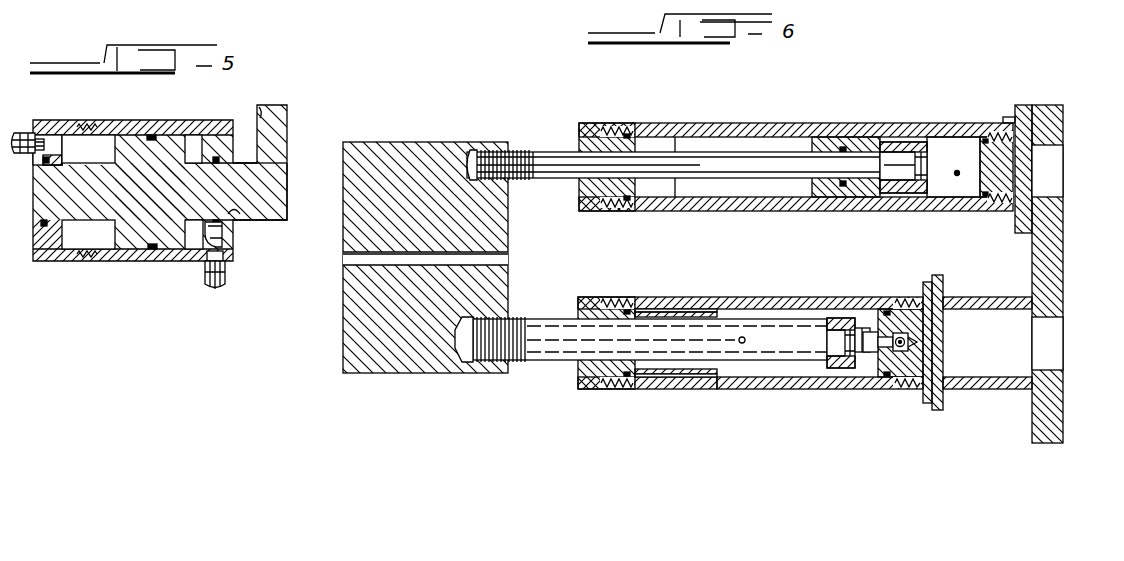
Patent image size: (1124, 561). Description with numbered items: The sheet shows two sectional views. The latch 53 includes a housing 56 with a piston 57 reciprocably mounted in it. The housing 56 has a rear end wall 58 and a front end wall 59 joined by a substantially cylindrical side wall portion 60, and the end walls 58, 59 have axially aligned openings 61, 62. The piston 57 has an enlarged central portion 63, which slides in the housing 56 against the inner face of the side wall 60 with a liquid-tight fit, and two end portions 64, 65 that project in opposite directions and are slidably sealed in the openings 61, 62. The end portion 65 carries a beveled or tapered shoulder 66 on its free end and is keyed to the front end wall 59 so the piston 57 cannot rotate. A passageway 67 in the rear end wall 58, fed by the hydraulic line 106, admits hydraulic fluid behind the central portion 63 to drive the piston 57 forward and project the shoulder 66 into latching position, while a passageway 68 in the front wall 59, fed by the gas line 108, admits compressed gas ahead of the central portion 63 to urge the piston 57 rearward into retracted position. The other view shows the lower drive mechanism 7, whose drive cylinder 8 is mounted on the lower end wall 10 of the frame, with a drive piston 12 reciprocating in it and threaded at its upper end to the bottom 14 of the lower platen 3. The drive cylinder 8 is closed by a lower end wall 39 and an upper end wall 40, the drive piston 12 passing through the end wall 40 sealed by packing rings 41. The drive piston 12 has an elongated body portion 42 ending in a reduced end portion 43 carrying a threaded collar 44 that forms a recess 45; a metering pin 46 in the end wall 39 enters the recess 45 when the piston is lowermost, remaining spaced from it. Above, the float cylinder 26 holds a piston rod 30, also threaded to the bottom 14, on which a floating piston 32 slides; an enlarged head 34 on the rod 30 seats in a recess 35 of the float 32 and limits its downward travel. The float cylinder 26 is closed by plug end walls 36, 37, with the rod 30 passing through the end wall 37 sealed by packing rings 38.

In FIG. 6, the lower platen 3 is at (373, 157).
In FIG. 6, the bottom of the lower platen 14 is at (488, 215).
In FIG. 6, the float cylinder 26 is at (772, 124).
In FIG. 6, the piston rod 30 is at (727, 150).
In FIG. 6, the floating piston 32 is at (823, 147).
In FIG. 6, the enlarged head 34 is at (933, 152).
In FIG. 6, the recess 35 is at (897, 142).
In FIG. 6, the lower end wall 36 is at (997, 153).
In FIG. 6, the upper end wall 37 is at (587, 132).
In FIG. 6, the packing rings 38 is at (632, 143).
In FIG. 6, the lower end wall of the frame 10 is at (1050, 250).
In FIG. 6, the lower drive mechanism 7 is at (663, 390).
In FIG. 6, the drive cylinder 8 is at (758, 389).
In FIG. 6, the drive piston 12 is at (737, 337).
In FIG. 6, the lower end wall 39 is at (883, 323).
In FIG. 6, the upper end wall 40 is at (583, 297).
In FIG. 6, the packing rings 41 is at (640, 303).
In FIG. 6, the body portion 42 is at (688, 338).
In FIG. 6, the reduced end portion 43 is at (852, 342).
In FIG. 6, the collar 44 is at (835, 323).
In FIG. 6, the recess 45 is at (948, 292).
In FIG. 6, the metering pin 46 is at (870, 355).
In FIG. 5, the latch 53 is at (182, 133).
In FIG. 5, the housing 56 is at (122, 133).
In FIG. 5, the piston 57 is at (97, 173).
In FIG. 5, the rear end wall 58 is at (42, 228).
In FIG. 5, the front end wall 59 is at (230, 239).
In FIG. 5, the side wall portion 60 is at (150, 133).
In FIG. 5, the opening 61 is at (37, 165).
In FIG. 5, the opening 62 is at (237, 214).
In FIG. 5, the enlarged central portion 63 is at (212, 134).
In FIG. 5, the end portion 64 is at (40, 200).
In FIG. 5, the end portion 65 is at (273, 207).
In FIG. 5, the tapered shoulder 66 is at (268, 174).
In FIG. 5, the passageway 67 is at (55, 131).
In FIG. 5, the passageway 68 is at (205, 247).
In FIG. 5, the hydraulic line 106 is at (15, 133).
In FIG. 5, the gas line 108 is at (223, 271).